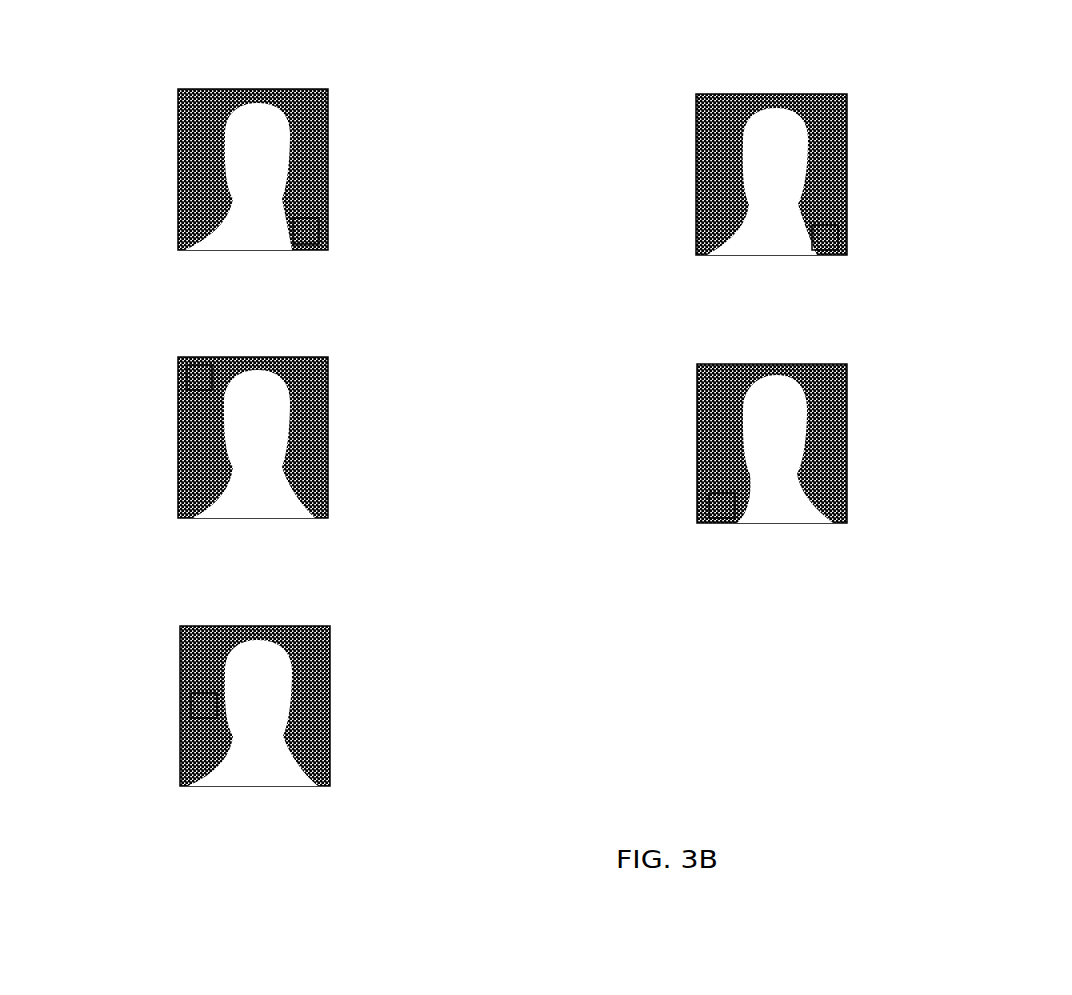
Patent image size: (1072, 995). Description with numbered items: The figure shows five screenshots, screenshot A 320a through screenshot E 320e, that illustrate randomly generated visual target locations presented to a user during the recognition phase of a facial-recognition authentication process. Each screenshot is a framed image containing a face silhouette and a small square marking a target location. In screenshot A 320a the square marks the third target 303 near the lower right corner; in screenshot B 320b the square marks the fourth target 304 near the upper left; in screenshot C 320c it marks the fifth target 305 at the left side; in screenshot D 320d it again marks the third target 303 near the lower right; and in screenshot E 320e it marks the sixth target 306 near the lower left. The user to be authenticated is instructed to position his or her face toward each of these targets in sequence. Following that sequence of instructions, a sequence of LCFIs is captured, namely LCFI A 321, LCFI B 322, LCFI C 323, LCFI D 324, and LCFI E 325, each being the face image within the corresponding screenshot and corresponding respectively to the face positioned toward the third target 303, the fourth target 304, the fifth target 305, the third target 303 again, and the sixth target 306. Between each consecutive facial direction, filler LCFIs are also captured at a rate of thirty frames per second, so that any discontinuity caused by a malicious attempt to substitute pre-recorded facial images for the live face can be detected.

The screenshot A 320a is at (349, 140).
The screenshot B 320b is at (349, 409).
The screenshot C 320c is at (350, 676).
The screenshot D 320d is at (868, 147).
The screenshot E 320e is at (868, 415).
The LCFI A 321 is at (346, 168).
The LCFI B 322 is at (348, 436).
The LCFI C 323 is at (348, 704).
The LCFI D 324 is at (865, 174).
The LCFI E 325 is at (879, 443).
The target 3 303 is at (663, 206).
The target 4 304 is at (352, 419).
The target 5 305 is at (355, 709).
The target 6 306 is at (871, 477).